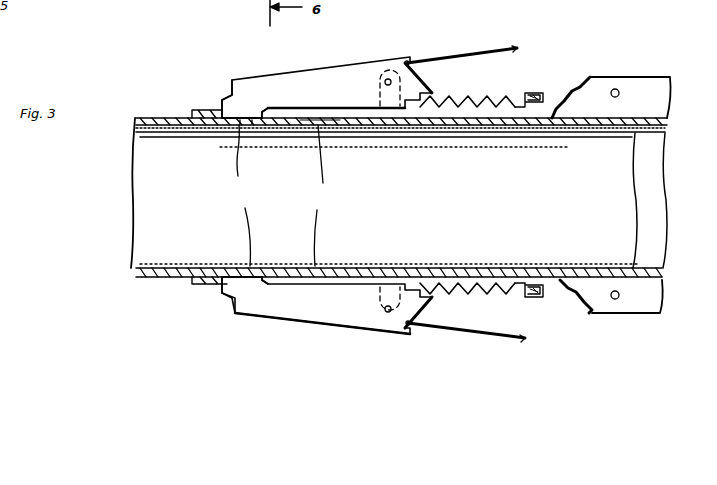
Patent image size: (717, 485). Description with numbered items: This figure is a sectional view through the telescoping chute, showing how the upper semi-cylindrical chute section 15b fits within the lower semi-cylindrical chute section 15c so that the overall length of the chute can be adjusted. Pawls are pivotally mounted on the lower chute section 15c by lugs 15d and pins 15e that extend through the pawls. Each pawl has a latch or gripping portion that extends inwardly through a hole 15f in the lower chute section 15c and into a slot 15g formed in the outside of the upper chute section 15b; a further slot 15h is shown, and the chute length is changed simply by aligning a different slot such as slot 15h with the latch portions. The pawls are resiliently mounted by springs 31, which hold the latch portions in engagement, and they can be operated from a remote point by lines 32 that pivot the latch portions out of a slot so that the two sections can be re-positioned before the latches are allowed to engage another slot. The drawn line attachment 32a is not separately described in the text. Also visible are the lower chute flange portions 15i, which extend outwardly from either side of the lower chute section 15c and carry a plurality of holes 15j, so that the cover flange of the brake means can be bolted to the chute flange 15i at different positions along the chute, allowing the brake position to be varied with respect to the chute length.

The upper semi-cylindrical chute section 15b is at (142, 278).
The lower semi-cylindrical chute section 15c is at (643, 277).
The lug 15d is at (378, 84).
The pin 15e is at (390, 79).
The hole 15f is at (220, 293).
The slot 15g is at (246, 193).
The slot 15h is at (320, 193).
The lower chute flange portion 15i is at (600, 77).
The hole 15j is at (618, 90).
The spring 31 is at (468, 100).
The line 32 is at (442, 330).
The rod 32a is at (495, 47).